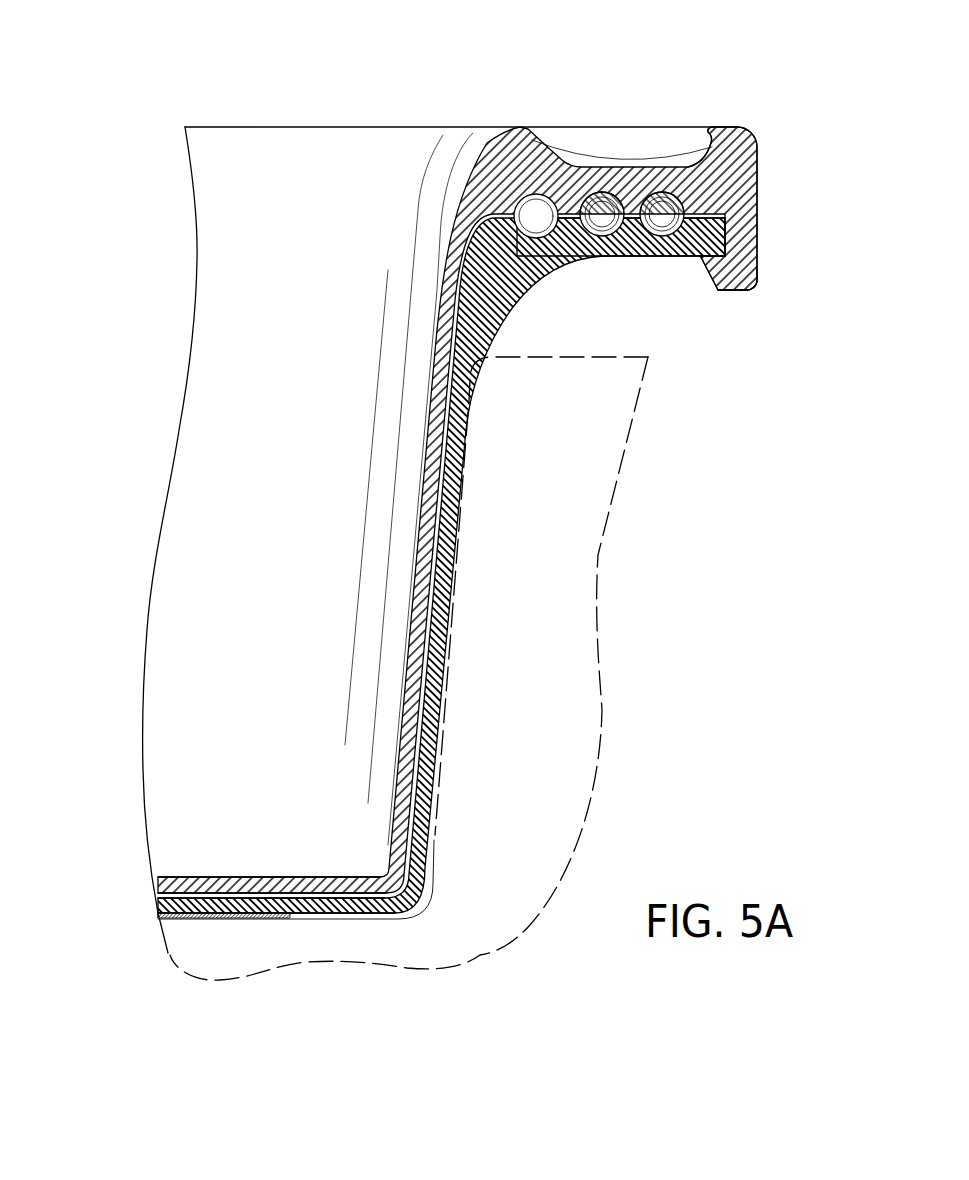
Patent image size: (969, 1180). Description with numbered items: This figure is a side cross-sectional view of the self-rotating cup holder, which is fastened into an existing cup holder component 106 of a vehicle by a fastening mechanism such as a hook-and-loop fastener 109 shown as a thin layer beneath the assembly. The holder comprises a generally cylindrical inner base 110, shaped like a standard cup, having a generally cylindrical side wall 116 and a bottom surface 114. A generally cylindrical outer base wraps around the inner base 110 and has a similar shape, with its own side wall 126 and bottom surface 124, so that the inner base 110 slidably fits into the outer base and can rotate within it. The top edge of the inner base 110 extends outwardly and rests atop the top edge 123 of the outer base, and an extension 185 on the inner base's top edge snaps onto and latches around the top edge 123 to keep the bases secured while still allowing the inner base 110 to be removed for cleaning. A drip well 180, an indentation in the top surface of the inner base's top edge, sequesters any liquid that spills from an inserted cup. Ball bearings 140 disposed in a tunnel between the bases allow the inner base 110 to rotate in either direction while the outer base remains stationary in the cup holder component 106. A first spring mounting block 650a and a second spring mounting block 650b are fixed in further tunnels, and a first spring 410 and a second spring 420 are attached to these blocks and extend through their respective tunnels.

The cup holder component 106 is at (597, 582).
The hook-and-loop fastener 109 is at (158, 915).
The inner base 110 is at (468, 170).
The bottom surface 114 is at (177, 877).
The side wall 116 is at (407, 665).
The top edge 123 is at (698, 250).
The bottom surface 124 is at (335, 913).
The side wall 126 is at (464, 418).
The ball bearings 140 is at (537, 205).
The drip well 180 is at (675, 138).
The extension 185 is at (747, 290).
The first spring 410 is at (602, 240).
The second spring 420 is at (661, 240).
The first spring mounting block 650a is at (596, 190).
The second spring mounting block 650b is at (653, 190).